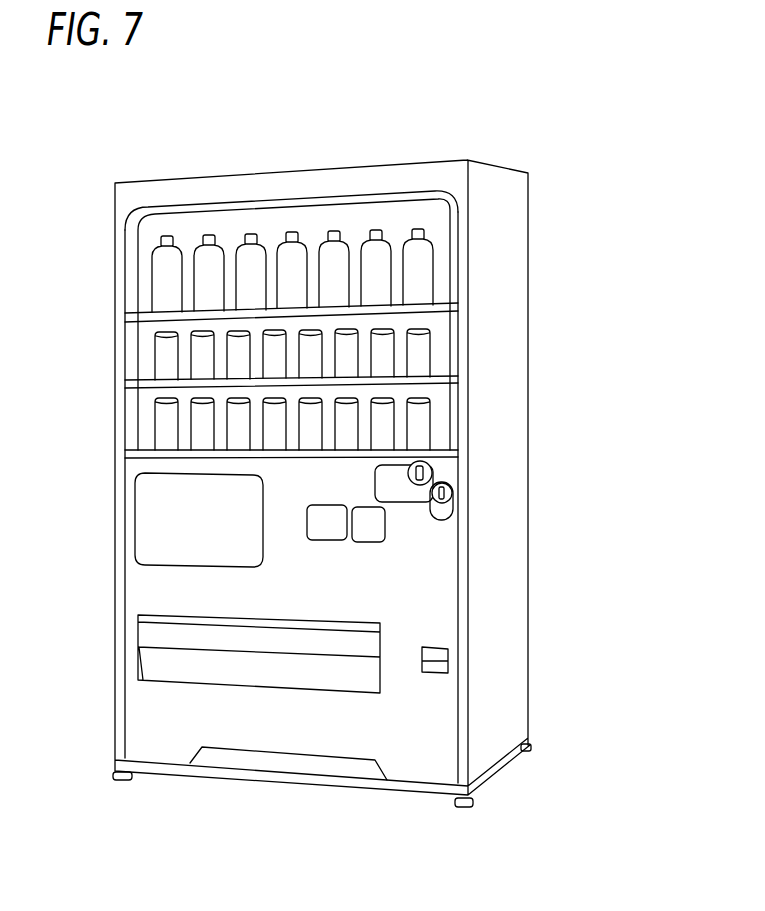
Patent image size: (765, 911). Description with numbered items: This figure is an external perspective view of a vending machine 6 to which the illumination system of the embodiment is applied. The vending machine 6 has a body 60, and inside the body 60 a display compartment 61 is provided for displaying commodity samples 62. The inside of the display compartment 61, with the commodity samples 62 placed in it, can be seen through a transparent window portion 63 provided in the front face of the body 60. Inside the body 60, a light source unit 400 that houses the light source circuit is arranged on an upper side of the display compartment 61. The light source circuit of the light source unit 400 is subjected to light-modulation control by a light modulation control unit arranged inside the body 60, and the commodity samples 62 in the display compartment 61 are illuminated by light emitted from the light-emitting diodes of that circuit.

The vending machine 6 is at (104, 719).
The body 60 is at (118, 585).
The light source unit 400 is at (218, 209).
The transparent window portion 63 is at (315, 217).
The display compartment 61 is at (132, 297).
The commodity samples 62 is at (167, 262).